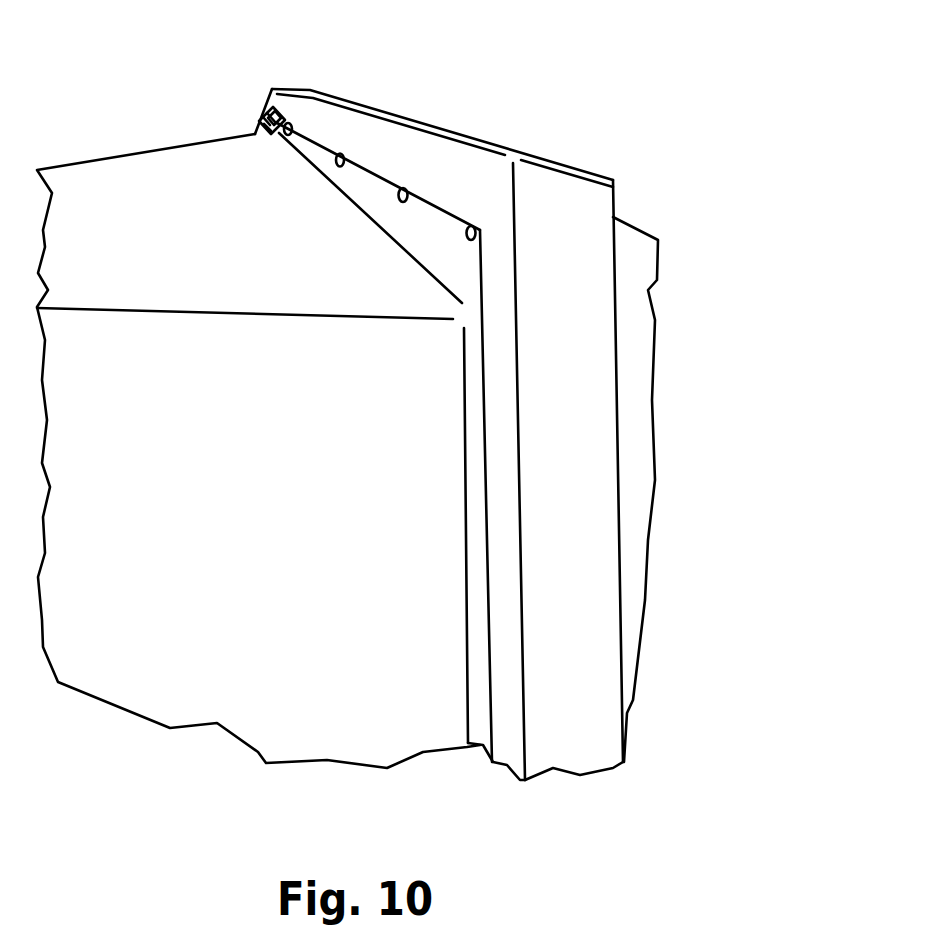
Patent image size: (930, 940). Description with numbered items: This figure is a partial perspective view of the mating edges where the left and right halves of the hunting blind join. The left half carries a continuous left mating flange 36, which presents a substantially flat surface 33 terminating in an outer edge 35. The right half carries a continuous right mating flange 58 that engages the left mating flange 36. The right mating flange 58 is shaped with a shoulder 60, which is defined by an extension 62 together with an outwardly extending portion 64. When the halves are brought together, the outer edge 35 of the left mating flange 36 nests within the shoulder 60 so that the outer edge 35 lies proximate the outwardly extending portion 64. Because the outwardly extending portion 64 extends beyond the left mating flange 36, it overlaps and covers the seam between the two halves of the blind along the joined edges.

The substantially flat surface 33 is at (288, 122).
The outer edge 35 is at (268, 122).
The left mating flange 36 is at (395, 399).
The right mating flange 58 is at (624, 465).
The shoulder 60 is at (264, 128).
The extension 62 is at (587, 310).
The outwardly extending portion 64 is at (350, 134).